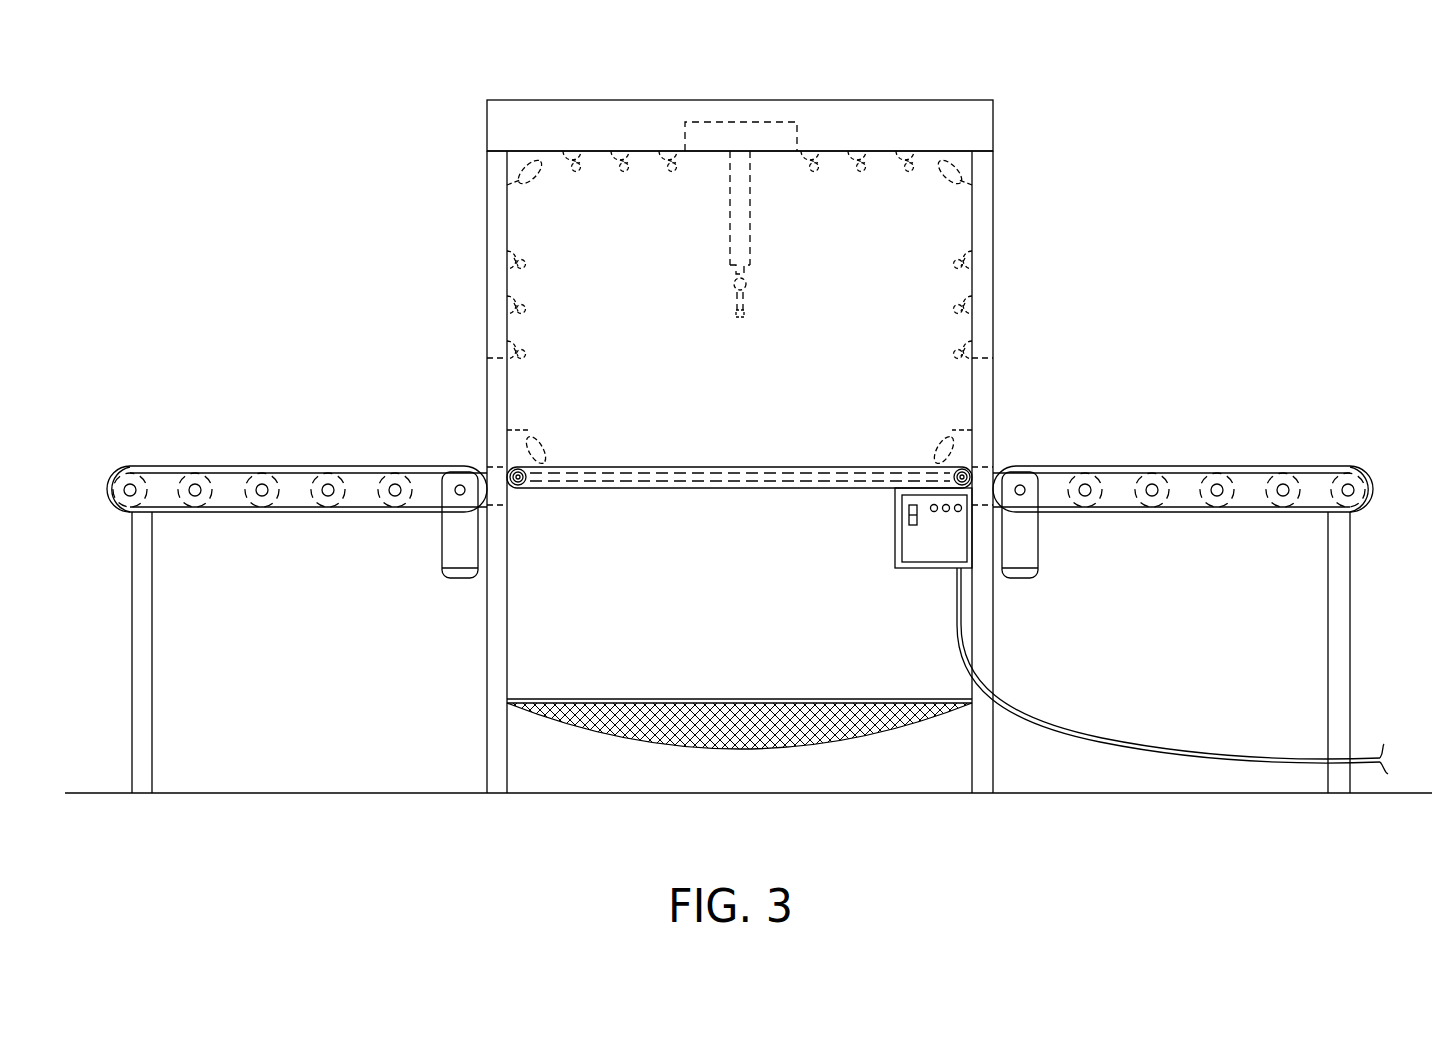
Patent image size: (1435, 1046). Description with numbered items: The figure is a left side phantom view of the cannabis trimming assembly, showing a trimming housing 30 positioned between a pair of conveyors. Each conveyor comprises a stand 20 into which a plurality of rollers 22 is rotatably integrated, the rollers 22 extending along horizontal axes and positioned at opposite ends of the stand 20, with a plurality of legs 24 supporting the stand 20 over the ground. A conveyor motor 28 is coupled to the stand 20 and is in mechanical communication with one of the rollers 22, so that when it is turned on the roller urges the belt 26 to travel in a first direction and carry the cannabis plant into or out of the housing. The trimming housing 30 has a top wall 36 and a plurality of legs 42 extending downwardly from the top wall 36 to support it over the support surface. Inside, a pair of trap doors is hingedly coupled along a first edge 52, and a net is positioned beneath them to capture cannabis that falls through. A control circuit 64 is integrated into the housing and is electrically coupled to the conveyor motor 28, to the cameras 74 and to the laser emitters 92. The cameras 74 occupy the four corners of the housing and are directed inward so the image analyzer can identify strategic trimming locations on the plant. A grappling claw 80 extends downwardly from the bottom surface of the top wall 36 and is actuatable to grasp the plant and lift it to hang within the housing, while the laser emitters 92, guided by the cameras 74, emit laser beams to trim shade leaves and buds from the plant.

The stand 20 is at (232, 480).
The rollers 22 is at (395, 480).
The legs 24 is at (130, 593).
The belt 26 is at (157, 466).
The conveyor motor 28 is at (443, 540).
The trimming housing 30 is at (487, 100).
The top wall 36 is at (893, 100).
The legs 42 is at (497, 740).
The first edge 52 is at (782, 480).
The control circuit 64 is at (913, 537).
The cameras 74 is at (530, 192).
The grappling claw 80 is at (752, 224).
The laser emitters 92 is at (672, 150).